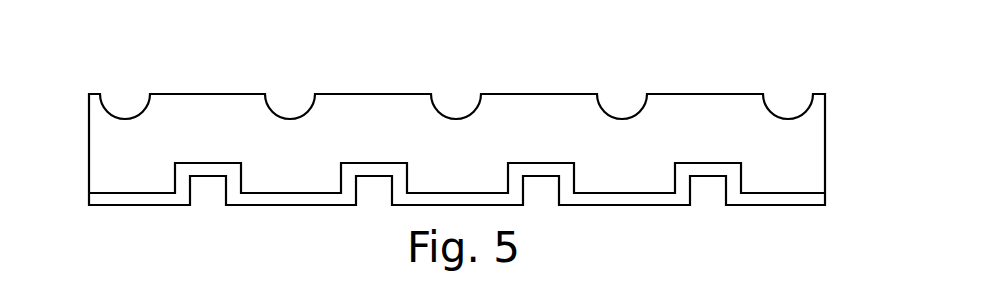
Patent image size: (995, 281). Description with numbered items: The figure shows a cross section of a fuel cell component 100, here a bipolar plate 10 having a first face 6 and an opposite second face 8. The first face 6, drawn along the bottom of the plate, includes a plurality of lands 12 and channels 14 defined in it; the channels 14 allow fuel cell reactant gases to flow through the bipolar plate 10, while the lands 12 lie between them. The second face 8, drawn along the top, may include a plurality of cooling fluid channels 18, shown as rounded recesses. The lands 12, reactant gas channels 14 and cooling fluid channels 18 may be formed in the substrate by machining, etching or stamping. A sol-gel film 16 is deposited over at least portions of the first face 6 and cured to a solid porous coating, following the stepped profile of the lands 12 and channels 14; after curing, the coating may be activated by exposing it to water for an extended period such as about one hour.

The fuel cell component 100 is at (97, 55).
The bipolar plate 10 is at (106, 141).
The second face 8 is at (176, 91).
The first face 6 is at (292, 194).
The land 12 is at (122, 190).
The channel 14 is at (205, 163).
The sol-gel film 16 is at (100, 197).
The cooling fluid channel 18 is at (266, 99).